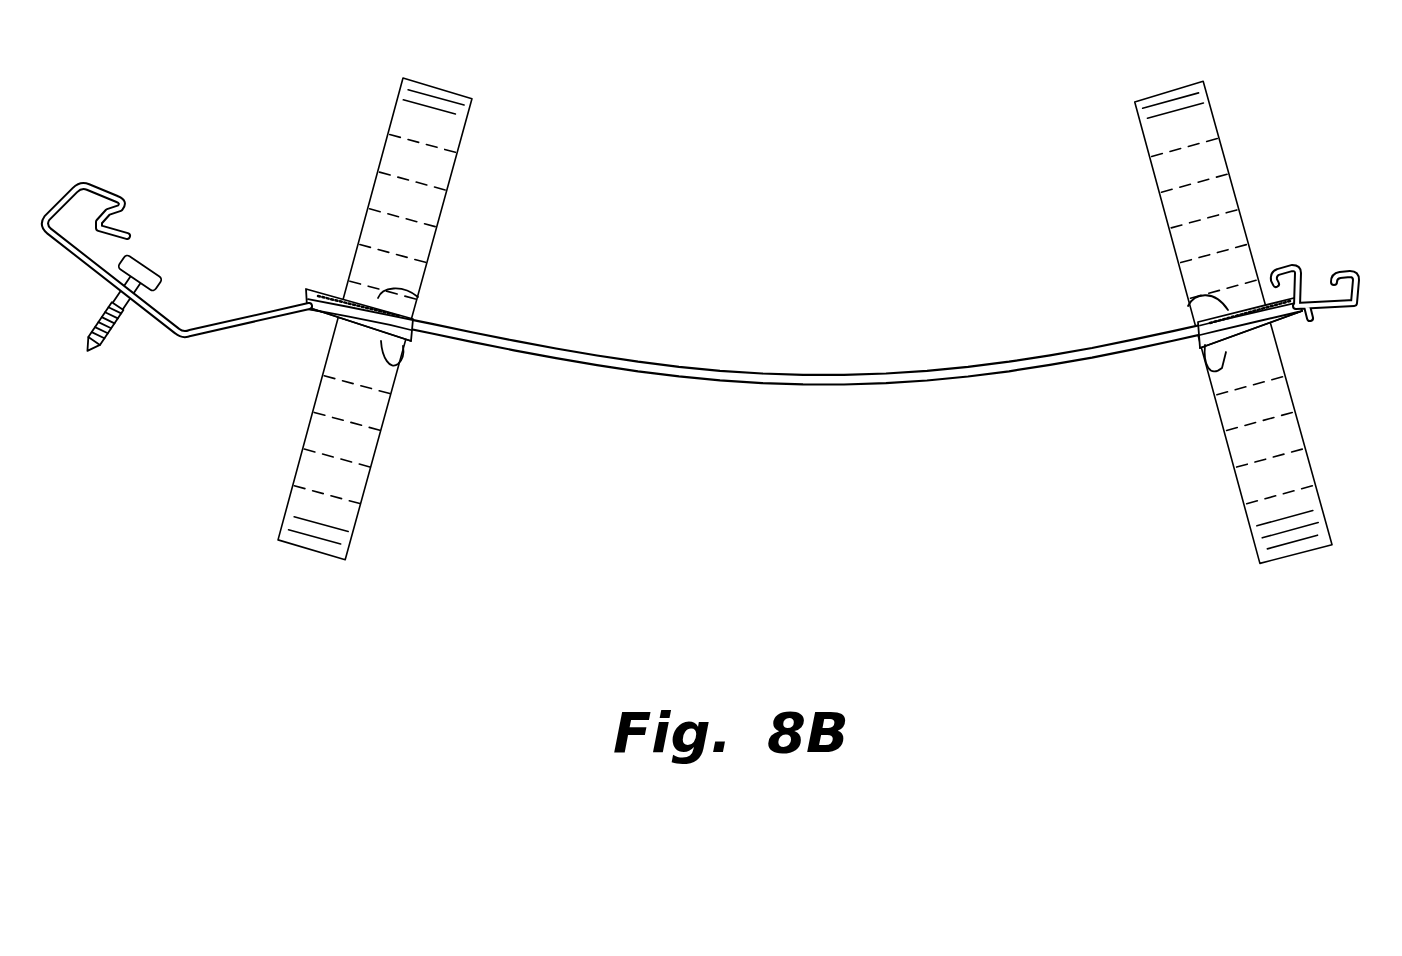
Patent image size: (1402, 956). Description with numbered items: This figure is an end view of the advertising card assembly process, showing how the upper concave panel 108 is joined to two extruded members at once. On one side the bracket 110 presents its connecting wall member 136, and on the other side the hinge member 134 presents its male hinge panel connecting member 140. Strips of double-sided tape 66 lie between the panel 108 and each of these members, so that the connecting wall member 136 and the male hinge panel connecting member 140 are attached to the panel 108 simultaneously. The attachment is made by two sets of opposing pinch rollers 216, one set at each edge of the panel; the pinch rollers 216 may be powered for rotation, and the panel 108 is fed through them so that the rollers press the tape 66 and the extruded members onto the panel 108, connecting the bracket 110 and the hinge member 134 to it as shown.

The double-sided tape 66 is at (400, 298).
The upper concave panel 108 is at (672, 383).
The bracket 110 is at (212, 327).
The hinge member 134 is at (1360, 280).
The connecting wall member 136 is at (405, 358).
The male hinge panel connecting member 140 is at (1207, 375).
The pinch rollers 216 is at (402, 114).